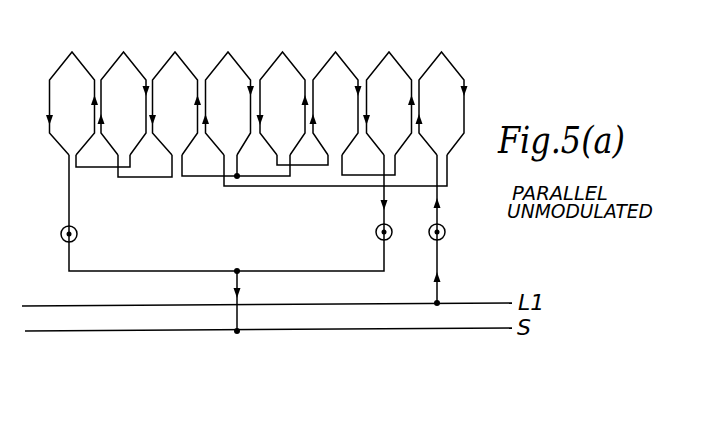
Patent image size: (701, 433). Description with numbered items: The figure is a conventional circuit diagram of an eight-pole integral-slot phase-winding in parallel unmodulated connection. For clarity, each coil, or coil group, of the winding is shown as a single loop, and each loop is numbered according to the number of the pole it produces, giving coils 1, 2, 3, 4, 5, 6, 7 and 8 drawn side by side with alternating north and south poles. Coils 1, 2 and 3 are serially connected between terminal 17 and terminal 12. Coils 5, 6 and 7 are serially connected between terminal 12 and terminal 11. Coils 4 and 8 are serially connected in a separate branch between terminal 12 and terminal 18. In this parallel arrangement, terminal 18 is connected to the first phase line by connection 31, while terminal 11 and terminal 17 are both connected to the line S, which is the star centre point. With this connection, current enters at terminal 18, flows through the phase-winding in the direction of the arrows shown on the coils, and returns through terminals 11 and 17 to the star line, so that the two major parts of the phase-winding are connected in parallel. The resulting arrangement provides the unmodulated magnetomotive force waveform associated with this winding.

The coil 1 is at (72, 87).
The coil 2 is at (124, 87).
The coil 3 is at (175, 87).
The coil 4 is at (228, 87).
The coil 5 is at (283, 87).
The coil 6 is at (336, 87).
The coil 7 is at (389, 87).
The coil 8 is at (442, 87).
The terminal 11 is at (376, 233).
The terminal 12 is at (237, 178).
The terminal 17 is at (61, 234).
The terminal 18 is at (445, 232).
The connection 31 is at (438, 284).